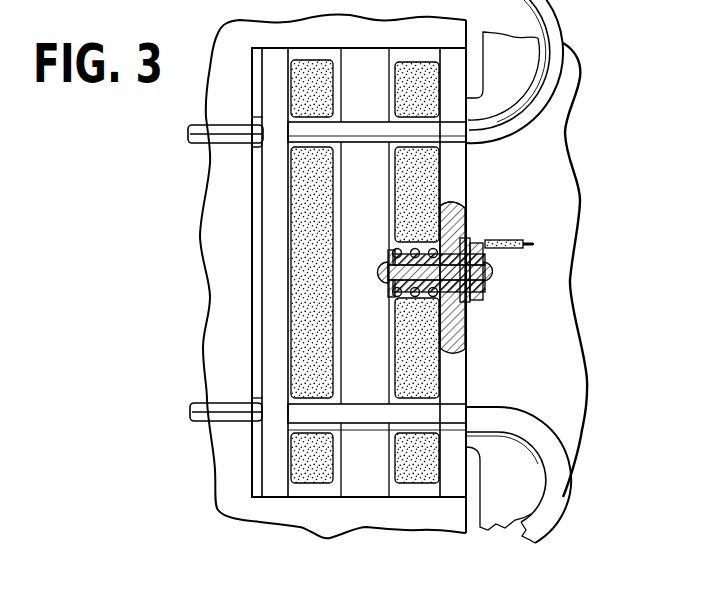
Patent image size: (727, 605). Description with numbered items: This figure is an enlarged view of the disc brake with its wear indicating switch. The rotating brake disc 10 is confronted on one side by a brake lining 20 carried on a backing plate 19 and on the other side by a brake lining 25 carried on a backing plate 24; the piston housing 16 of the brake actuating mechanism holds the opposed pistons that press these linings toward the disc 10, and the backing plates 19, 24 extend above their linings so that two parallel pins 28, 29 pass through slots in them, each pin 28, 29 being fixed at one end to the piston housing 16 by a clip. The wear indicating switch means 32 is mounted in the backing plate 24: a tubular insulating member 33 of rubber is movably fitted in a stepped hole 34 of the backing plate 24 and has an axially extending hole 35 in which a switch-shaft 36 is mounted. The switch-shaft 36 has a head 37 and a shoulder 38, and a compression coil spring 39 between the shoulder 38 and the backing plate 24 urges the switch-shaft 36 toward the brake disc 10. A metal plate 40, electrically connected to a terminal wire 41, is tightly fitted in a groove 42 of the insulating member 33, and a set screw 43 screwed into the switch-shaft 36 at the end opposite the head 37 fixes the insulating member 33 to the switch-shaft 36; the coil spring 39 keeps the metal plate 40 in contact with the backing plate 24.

The disc 10 is at (366, 482).
The piston housing 16 is at (217, 183).
The backing plate 19 is at (272, 240).
The brake lining 20 is at (300, 320).
The backing plate 24 is at (450, 487).
The brake lining 25 is at (416, 481).
The pin 28 is at (559, 74).
The pin 29 is at (552, 458).
The wear indicating switch means 32 is at (500, 306).
The tubular insulating member 33 is at (469, 333).
The stepped hole 34 is at (464, 234).
The axially extending hole 35 is at (501, 295).
The switch-shaft 36 is at (409, 257).
The head 37 is at (392, 264).
The shoulder 38 is at (392, 293).
The compression coil spring 39 is at (418, 294).
The metal plate 40 is at (470, 238).
The terminal wire 41 is at (533, 245).
The groove 42 is at (473, 303).
The set screw 43 is at (490, 268).